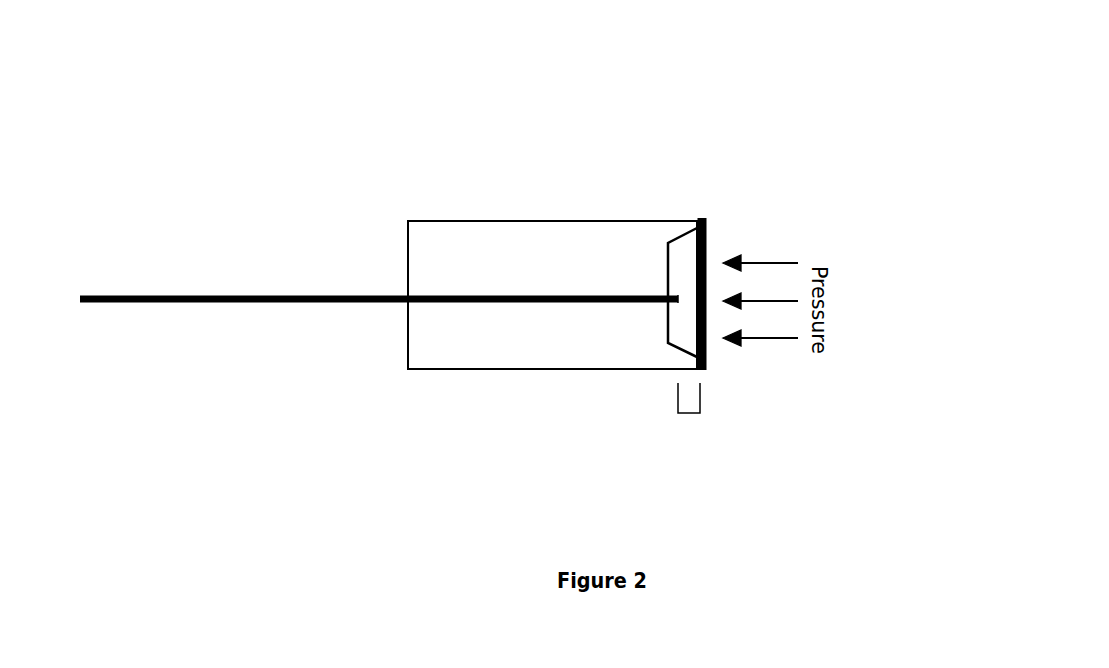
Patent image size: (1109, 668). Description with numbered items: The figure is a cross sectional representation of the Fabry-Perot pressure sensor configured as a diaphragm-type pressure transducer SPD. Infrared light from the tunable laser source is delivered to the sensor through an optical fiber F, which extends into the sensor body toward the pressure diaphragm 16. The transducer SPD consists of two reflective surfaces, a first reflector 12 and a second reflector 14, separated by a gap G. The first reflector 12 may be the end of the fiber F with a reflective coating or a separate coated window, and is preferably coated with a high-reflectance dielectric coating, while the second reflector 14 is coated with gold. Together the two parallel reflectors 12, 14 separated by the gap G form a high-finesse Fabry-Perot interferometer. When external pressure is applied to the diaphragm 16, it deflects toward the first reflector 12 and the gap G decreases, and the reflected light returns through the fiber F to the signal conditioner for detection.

The first reflector 12 is at (672, 303).
The second reflector 14 is at (695, 302).
The pressure diaphragm 16 is at (707, 247).
The optical fiber F is at (207, 296).
The gap G is at (689, 413).
The diaphragm-type pressure transducer SPD is at (543, 187).